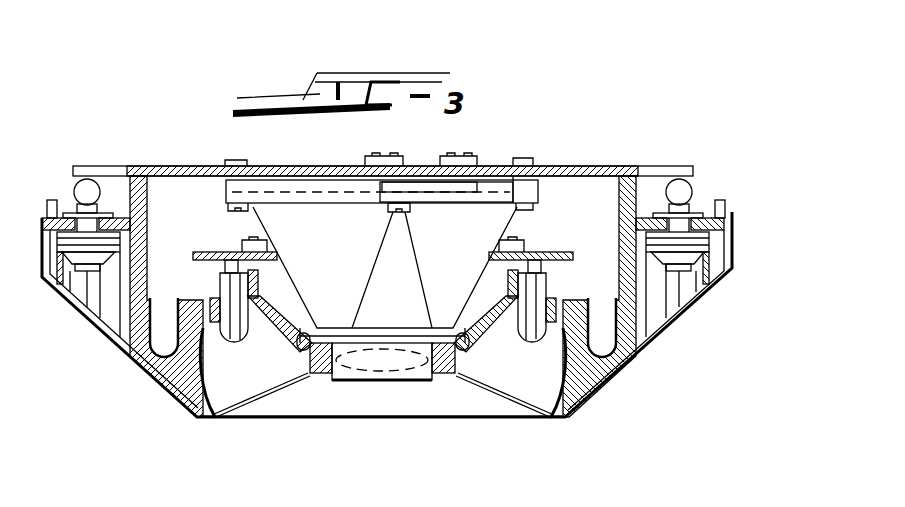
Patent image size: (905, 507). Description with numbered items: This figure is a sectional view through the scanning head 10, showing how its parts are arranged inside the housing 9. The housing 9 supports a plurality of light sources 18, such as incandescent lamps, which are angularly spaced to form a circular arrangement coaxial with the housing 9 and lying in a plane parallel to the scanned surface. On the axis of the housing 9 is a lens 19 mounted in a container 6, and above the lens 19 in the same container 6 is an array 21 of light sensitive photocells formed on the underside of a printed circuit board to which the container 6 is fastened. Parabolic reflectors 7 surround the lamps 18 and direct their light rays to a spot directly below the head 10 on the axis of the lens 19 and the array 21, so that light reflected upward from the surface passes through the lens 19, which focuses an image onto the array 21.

The scanning head 10 is at (750, 200).
The array of light sensitive photocells 21 is at (481, 178).
The container 6 is at (448, 277).
The lens 19 is at (386, 362).
The light sources 18 is at (230, 338).
The parabolic reflectors 7 is at (225, 378).
The housing 9 is at (640, 352).